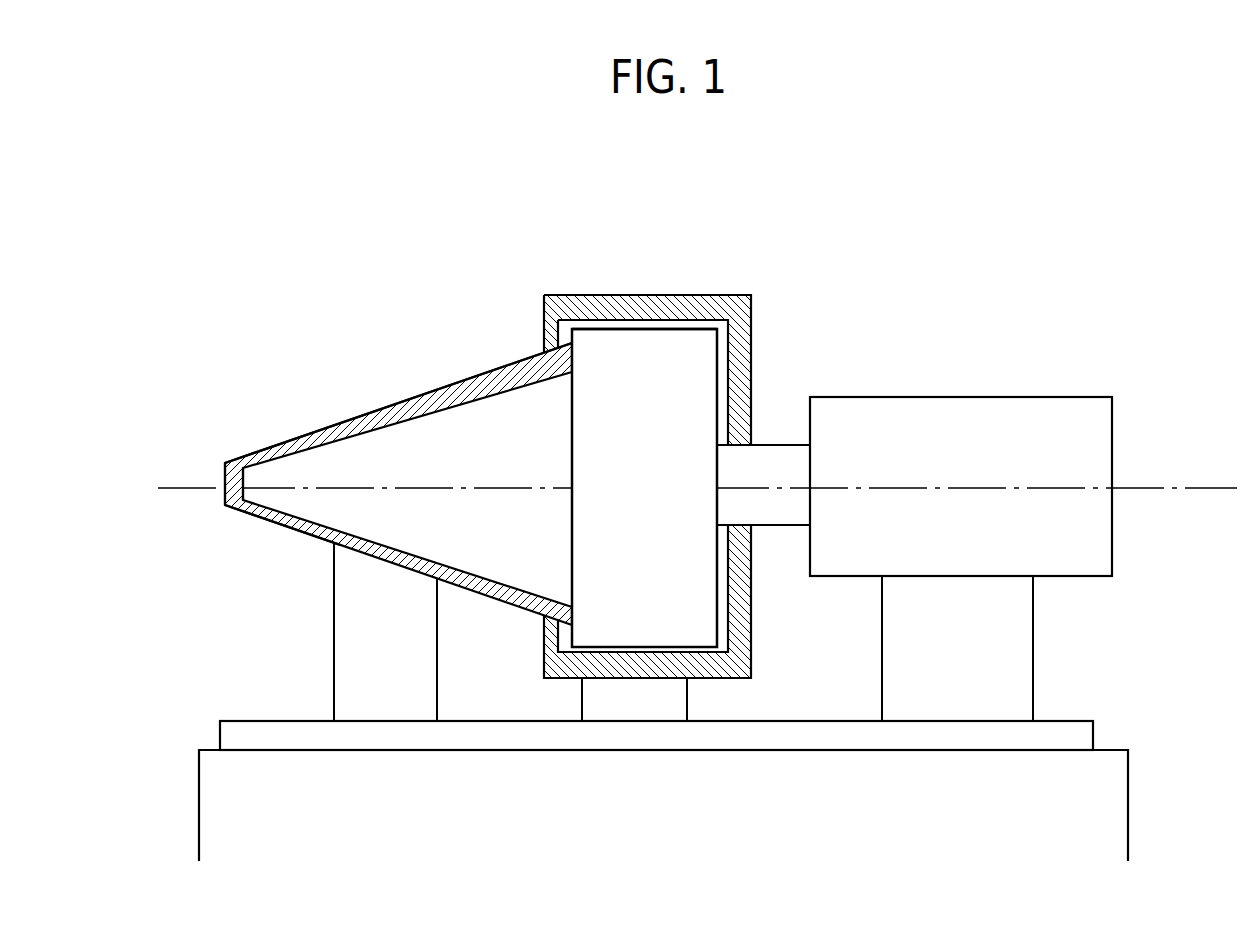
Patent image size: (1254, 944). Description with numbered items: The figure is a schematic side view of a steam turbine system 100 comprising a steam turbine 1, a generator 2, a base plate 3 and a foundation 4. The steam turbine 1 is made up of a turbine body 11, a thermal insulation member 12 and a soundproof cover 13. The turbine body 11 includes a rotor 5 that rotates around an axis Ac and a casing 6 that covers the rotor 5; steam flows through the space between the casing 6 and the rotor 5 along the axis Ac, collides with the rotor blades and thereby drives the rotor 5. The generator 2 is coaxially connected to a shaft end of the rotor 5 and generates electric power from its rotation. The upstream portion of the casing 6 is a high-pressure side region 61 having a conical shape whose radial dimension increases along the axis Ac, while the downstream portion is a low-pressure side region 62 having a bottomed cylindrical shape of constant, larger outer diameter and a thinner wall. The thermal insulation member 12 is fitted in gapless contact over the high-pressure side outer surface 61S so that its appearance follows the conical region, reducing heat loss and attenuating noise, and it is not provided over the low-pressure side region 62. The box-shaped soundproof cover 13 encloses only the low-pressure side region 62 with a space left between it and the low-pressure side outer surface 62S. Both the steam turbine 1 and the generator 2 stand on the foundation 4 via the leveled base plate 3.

The steam turbine system 100 is at (1107, 180).
The steam turbine 1 is at (454, 416).
The generator 2 is at (1005, 413).
The base plate 3 is at (1093, 721).
The foundation 4 is at (1110, 820).
The rotor 5 is at (777, 455).
The casing 6 is at (454, 416).
The turbine body 11 is at (278, 518).
The thermal insulation member 12 is at (248, 455).
The soundproof cover 13 is at (752, 295).
The high-pressure side region 61 is at (381, 405).
The high-pressure side outer surface 61S is at (362, 428).
The low-pressure side region 62 is at (645, 417).
The low-pressure side outer surface 62S is at (635, 330).
The axis Ac is at (1237, 487).